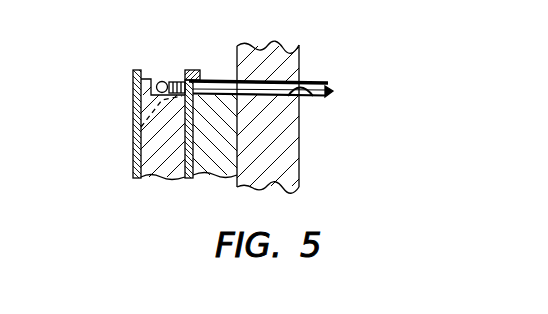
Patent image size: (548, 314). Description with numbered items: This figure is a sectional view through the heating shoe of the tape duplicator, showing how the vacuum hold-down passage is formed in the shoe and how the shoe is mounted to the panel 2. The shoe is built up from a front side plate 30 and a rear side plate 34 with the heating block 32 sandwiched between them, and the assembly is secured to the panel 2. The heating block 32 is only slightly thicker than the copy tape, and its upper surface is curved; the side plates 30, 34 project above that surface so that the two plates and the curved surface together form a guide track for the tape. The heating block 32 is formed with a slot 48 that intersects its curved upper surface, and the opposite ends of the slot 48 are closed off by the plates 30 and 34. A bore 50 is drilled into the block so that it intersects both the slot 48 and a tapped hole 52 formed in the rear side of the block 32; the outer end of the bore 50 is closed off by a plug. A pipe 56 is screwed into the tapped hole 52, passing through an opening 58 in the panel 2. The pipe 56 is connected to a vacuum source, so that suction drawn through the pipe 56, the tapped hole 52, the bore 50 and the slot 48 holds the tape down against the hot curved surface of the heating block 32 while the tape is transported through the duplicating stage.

The panel 2 is at (287, 160).
The front side plate 30 is at (133, 93).
The heating block 32 is at (156, 158).
The rear side plate 34 is at (190, 176).
The slot 48 is at (141, 127).
The bore 50 is at (159, 81).
The tapped hole 52 is at (174, 80).
The pipe 56 is at (326, 86).
The opening 58 is at (306, 97).